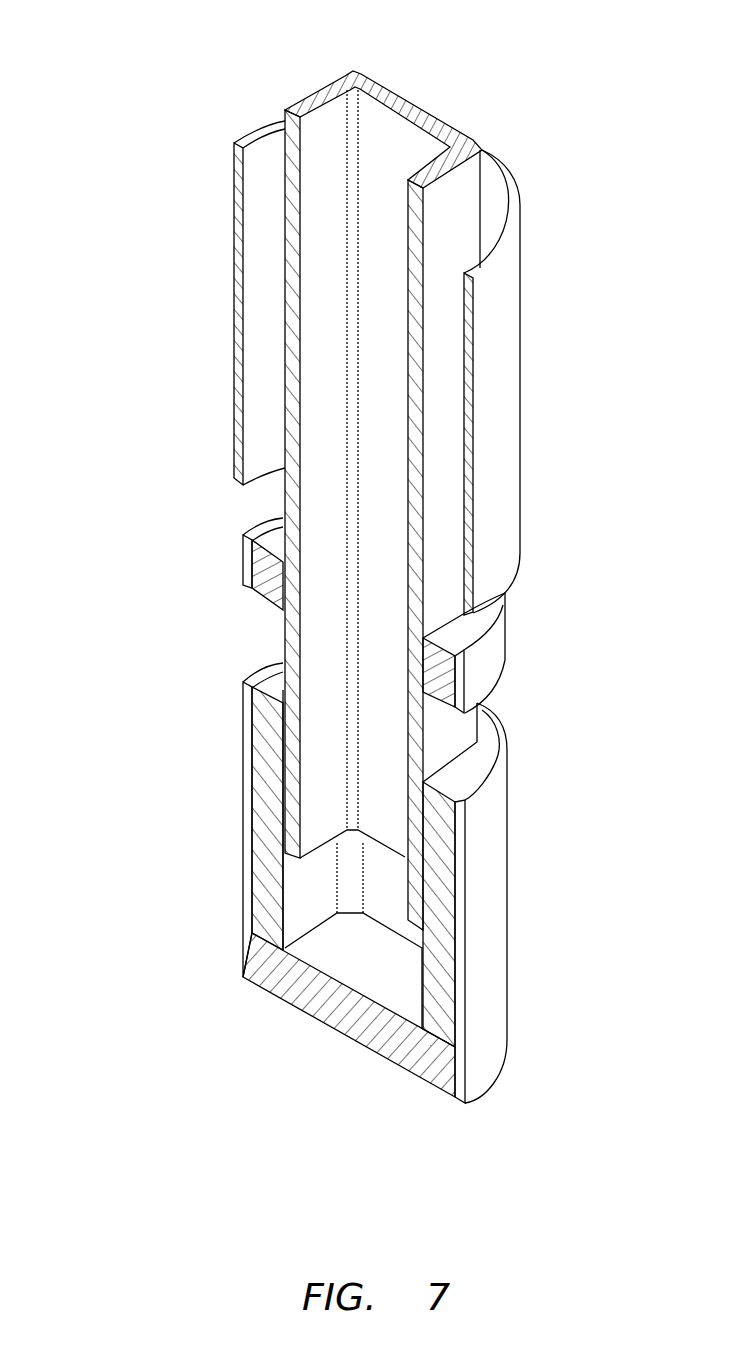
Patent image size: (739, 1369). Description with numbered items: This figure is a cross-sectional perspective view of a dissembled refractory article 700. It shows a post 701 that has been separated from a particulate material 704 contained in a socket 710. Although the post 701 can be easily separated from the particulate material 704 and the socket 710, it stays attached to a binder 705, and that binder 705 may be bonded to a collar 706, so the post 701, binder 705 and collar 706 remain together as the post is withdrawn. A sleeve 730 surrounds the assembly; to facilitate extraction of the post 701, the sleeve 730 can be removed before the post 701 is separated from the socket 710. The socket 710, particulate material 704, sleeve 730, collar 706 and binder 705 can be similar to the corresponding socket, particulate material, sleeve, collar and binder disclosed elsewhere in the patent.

The dissembled refractory article 700 is at (135, 45).
The post 701 is at (313, 93).
The sleeve 730 is at (233, 188).
The collar 706 is at (241, 559).
The binder 705 is at (470, 632).
The particulate material 704 is at (483, 752).
The socket 710 is at (512, 867).